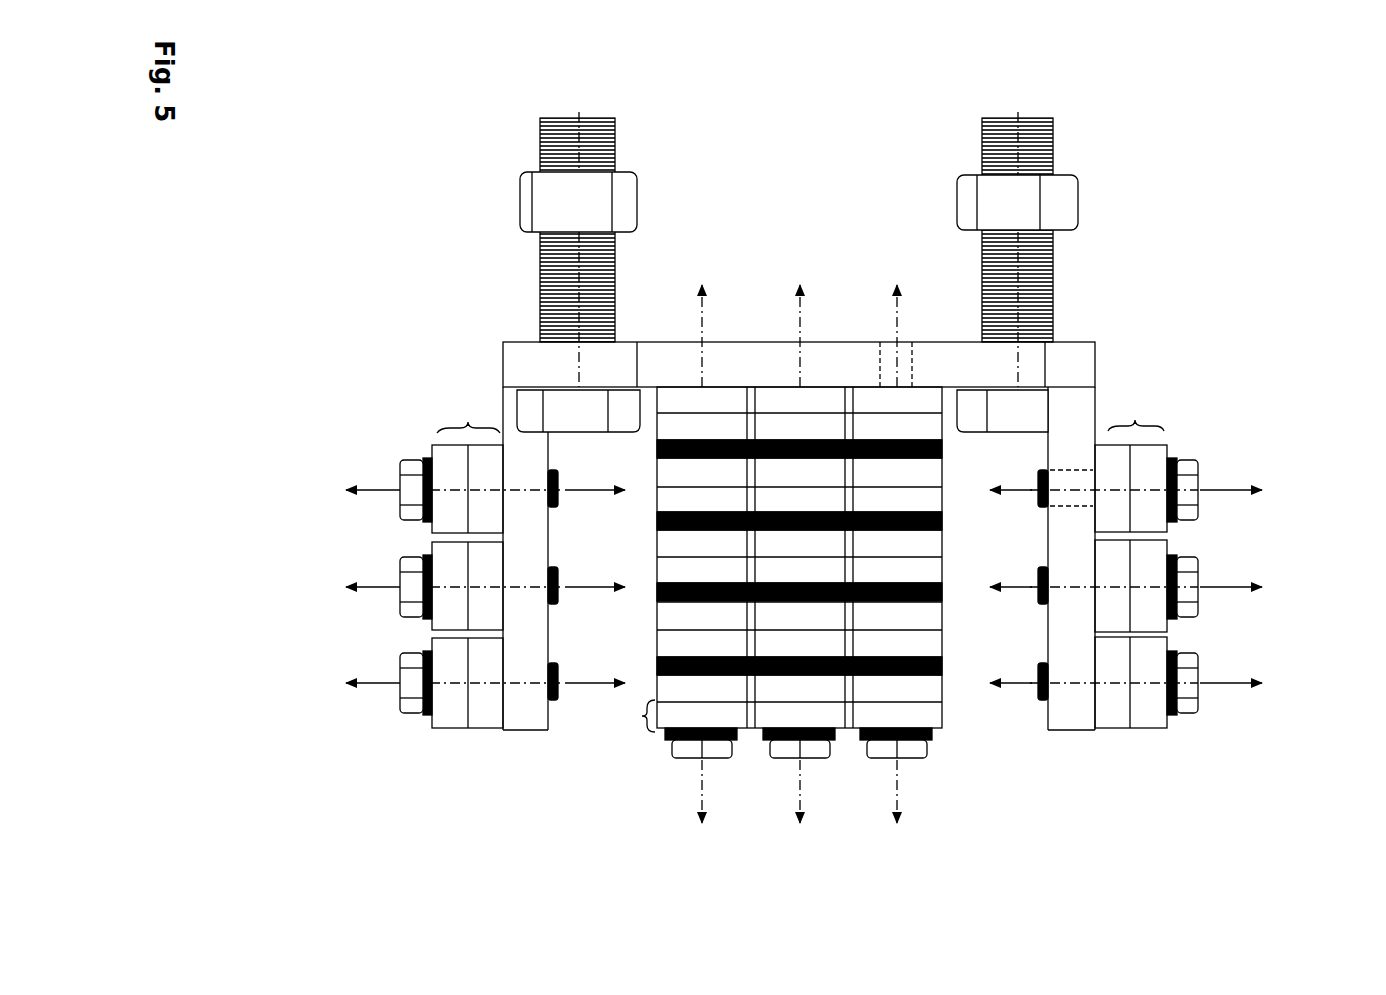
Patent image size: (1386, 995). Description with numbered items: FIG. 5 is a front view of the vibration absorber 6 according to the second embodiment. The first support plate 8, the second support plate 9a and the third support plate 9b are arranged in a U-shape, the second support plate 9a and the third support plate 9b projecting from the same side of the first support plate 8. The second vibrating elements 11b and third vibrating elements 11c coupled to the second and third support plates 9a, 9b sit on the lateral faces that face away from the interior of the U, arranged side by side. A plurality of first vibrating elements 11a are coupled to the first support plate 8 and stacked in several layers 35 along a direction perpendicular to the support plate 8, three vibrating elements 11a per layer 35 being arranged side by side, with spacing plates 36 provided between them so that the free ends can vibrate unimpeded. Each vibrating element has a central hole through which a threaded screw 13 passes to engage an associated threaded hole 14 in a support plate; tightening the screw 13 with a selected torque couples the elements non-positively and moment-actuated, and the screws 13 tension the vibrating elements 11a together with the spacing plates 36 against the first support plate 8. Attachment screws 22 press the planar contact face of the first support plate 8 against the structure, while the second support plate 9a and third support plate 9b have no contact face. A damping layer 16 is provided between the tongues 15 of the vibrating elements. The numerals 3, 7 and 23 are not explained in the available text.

The flow direction arrows 3 is at (378, 490).
The vibration absorber 6 is at (353, 287).
The top plate 7 is at (1097, 330).
The first support plate 8 is at (843, 343).
The second support plate 9a is at (1068, 735).
The third support plate 9b is at (520, 735).
The first vibrating elements 11a is at (640, 745).
The second vibrating elements 11b is at (1135, 420).
The third vibrating elements 11c is at (468, 422).
The threaded screw 13 is at (405, 463).
The threaded hole 14 is at (662, 338).
The tongues 15 is at (440, 728).
The damping layer 16 is at (460, 738).
The attachment screws 22 is at (505, 218).
The threaded bolt 23 is at (543, 188).
The layers 35 is at (655, 450).
The spacing plates 36 is at (653, 410).